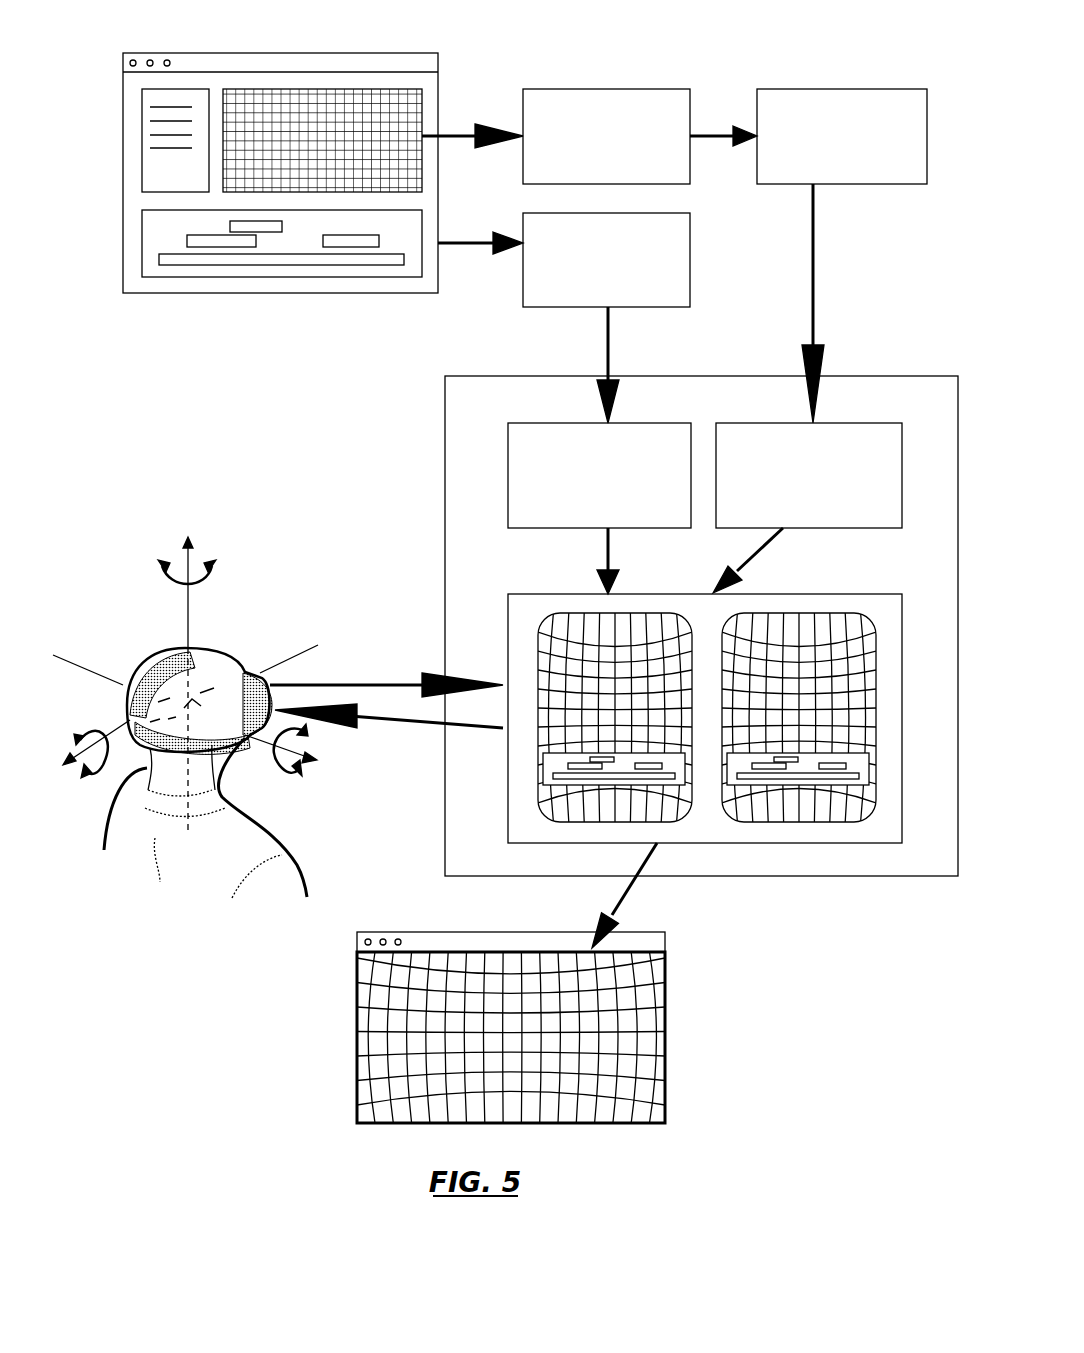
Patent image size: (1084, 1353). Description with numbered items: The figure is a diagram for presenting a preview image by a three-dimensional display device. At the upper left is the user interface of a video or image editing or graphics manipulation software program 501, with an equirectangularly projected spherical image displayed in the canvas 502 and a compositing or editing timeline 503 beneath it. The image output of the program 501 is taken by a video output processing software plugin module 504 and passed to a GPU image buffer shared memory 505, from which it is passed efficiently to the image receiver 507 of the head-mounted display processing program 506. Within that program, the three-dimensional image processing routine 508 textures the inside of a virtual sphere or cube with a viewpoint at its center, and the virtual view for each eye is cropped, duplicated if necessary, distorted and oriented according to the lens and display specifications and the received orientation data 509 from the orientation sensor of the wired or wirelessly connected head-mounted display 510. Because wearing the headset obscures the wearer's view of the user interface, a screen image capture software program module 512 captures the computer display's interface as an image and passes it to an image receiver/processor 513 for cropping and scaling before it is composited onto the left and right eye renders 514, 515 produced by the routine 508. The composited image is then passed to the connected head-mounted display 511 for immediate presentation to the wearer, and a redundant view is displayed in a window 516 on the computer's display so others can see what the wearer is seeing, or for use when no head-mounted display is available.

The video or image editing or graphics manipulation software program 501 is at (276, 52).
The canvas 502 is at (328, 100).
The compositing or editing timeline 503 is at (235, 272).
The video output processing software plugin module 504 is at (577, 88).
The image texture buffer memory 505 is at (825, 88).
The head-mounted display processing program 506 is at (706, 376).
The image receiver 507 is at (858, 423).
The 3D image processing routine 508 is at (790, 594).
The received orientation data 509 is at (358, 682).
The head-mounted display 510 is at (262, 668).
The connected head-mounted display 511 is at (432, 725).
The screen image capture software program module 512 is at (556, 309).
The image receiver/processor 513 is at (508, 468).
The left eye render 514 is at (613, 772).
The right eye render 515 is at (797, 772).
The window 516 is at (668, 1067).